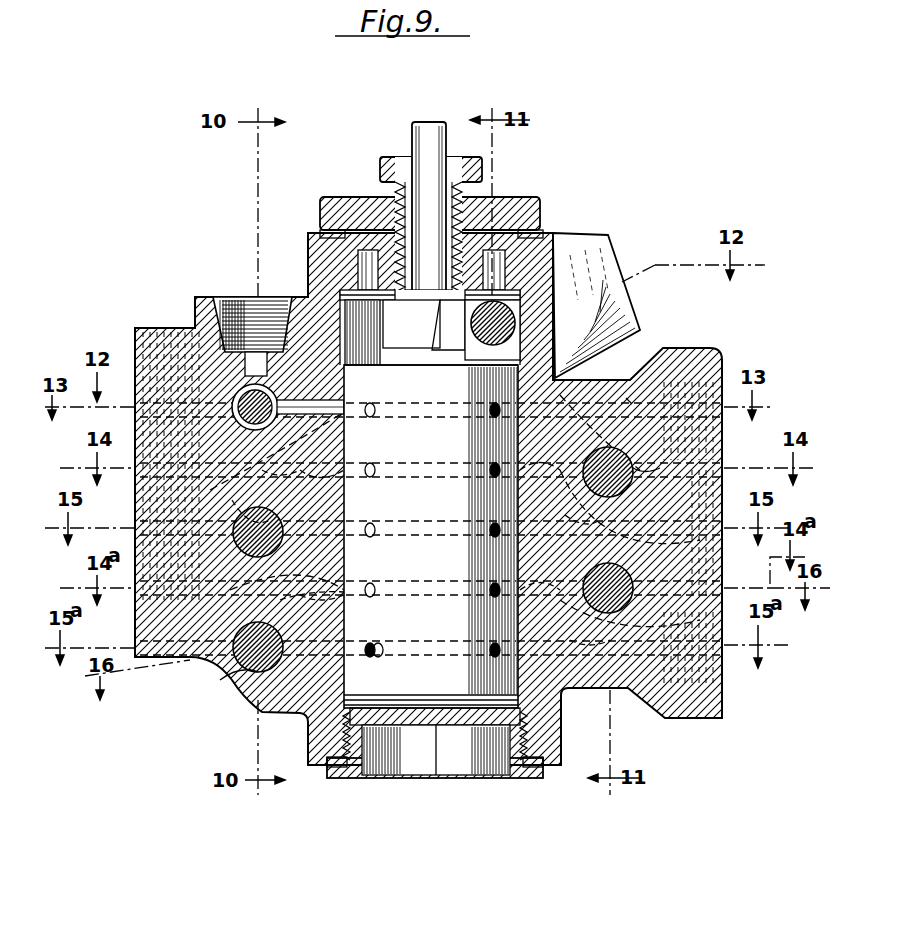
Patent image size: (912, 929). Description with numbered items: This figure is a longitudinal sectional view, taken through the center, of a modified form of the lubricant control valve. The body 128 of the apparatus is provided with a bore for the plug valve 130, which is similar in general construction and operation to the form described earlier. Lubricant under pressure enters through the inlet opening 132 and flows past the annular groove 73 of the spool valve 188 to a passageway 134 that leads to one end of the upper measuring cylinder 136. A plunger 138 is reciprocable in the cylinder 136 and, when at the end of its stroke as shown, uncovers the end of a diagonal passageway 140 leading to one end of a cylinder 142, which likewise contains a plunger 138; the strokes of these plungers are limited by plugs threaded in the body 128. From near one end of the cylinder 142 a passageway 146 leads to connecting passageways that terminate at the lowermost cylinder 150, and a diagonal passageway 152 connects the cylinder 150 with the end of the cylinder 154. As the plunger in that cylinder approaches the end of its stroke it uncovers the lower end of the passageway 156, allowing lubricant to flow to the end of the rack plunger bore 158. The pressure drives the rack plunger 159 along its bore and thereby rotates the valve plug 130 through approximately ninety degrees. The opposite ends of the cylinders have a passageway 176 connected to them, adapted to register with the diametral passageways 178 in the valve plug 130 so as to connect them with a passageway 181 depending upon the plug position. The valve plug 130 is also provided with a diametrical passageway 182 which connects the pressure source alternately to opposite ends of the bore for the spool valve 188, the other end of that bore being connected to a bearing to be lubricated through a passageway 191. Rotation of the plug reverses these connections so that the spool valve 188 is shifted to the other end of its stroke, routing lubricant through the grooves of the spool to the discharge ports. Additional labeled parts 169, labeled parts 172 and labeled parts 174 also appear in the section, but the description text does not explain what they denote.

The annular groove 73 is at (273, 401).
The body 128 is at (456, 450).
The plug valve 130 is at (444, 444).
The inlet opening 132 is at (275, 298).
The passageway 134 is at (281, 457).
The upper measuring cylinder 136 is at (255, 510).
The plunger 138 is at (245, 622).
The diagonal passageway 140 is at (312, 582).
The cylinder 142 is at (219, 685).
The passageway 146 is at (415, 642).
The lowermost cylinder 150 is at (570, 640).
The diagonal passageway 152 is at (563, 508).
The cylinder 154 is at (668, 460).
The passageway 156 is at (601, 370).
The rack plunger bore 158 is at (581, 305).
The rack plunger 159 is at (493, 305).
The spool bore 169 is at (413, 538).
The orifice 172 is at (440, 528).
The bolt holes 174 is at (608, 534).
The passageway 176 is at (535, 462).
The diametral passageways 178 is at (400, 470).
The passageway 181 is at (323, 519).
The diametrical passageway 182 is at (440, 412).
The spool valve 188 is at (347, 316).
The passageway 191 is at (645, 372).